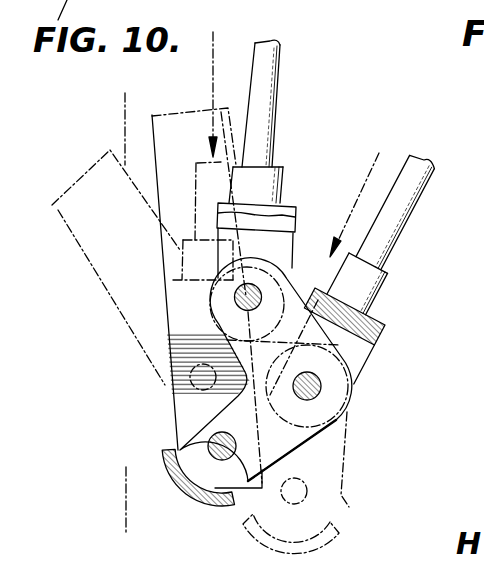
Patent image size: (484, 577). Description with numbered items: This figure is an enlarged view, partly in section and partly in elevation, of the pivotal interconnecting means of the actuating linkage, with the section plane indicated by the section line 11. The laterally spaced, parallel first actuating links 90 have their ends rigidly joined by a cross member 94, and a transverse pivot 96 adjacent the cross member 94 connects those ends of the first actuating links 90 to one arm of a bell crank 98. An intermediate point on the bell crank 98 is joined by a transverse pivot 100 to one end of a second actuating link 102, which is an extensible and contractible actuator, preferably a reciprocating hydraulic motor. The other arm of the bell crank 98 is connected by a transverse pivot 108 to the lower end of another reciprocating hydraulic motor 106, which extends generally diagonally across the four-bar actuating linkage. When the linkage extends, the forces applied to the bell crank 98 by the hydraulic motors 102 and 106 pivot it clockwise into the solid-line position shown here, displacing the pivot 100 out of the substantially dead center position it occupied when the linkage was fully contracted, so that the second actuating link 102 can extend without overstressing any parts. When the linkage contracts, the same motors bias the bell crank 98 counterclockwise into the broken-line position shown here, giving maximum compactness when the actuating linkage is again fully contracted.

The section line 11- 11 is at (113, 107).
The first actuating link 90 is at (160, 184).
The cross member 94 is at (203, 500).
The transverse pivot 96 is at (208, 443).
The bell crank 98 is at (308, 438).
The transverse pivot 100 is at (321, 384).
The second actuating link 102 is at (415, 214).
The hydraulic motor 106 is at (270, 100).
The transverse pivot 108 is at (247, 296).